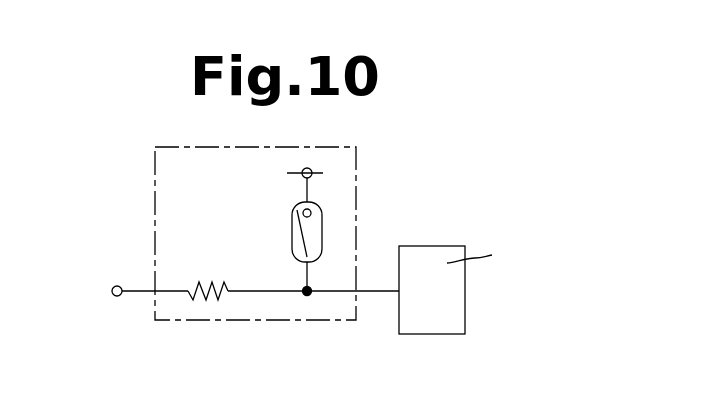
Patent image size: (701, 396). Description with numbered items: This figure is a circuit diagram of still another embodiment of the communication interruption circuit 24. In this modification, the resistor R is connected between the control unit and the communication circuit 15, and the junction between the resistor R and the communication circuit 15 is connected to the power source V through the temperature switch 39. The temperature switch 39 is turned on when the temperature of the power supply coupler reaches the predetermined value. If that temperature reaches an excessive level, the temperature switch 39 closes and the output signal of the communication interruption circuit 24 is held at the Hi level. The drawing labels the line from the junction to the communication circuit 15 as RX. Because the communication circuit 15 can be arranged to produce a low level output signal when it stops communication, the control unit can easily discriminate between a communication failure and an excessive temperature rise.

The communication interruption circuit 24 is at (356, 167).
The communication circuit 15 is at (423, 246).
The temperature switch 39 is at (291, 232).
The resistor R is at (201, 282).
The power source V is at (303, 171).
The receive signal line RX is at (375, 291).